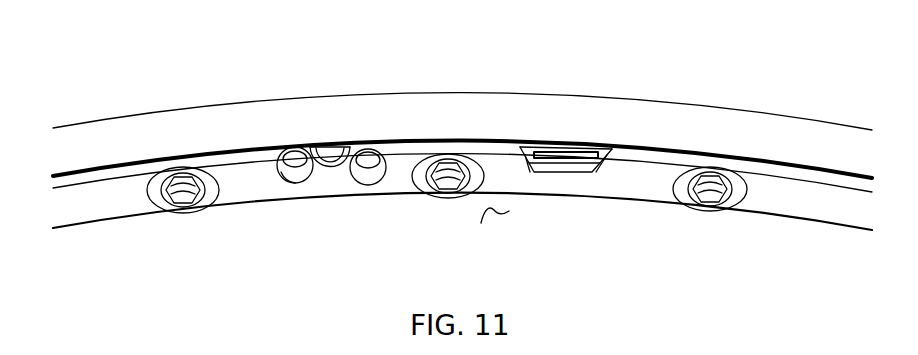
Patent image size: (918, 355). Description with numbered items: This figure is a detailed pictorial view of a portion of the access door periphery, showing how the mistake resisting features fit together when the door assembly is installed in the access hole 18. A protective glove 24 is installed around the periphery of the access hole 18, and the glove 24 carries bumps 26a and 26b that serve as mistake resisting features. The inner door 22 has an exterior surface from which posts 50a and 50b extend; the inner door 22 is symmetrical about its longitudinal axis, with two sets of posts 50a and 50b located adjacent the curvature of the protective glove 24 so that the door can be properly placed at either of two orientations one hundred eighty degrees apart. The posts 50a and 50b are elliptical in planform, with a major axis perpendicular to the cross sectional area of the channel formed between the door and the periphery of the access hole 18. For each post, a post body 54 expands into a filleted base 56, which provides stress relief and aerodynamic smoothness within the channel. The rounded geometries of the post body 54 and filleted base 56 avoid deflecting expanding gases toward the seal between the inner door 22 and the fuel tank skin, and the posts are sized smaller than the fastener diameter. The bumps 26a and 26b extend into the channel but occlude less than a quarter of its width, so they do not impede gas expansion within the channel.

The access hole 18 is at (460, 140).
The inner door 22 is at (492, 213).
The protective glove 24 is at (630, 156).
The bump 26a is at (559, 150).
The bump 26b is at (331, 152).
The post 50a is at (369, 150).
The post 50b is at (302, 168).
The post body 54 is at (292, 178).
The filleted base 56 is at (300, 172).